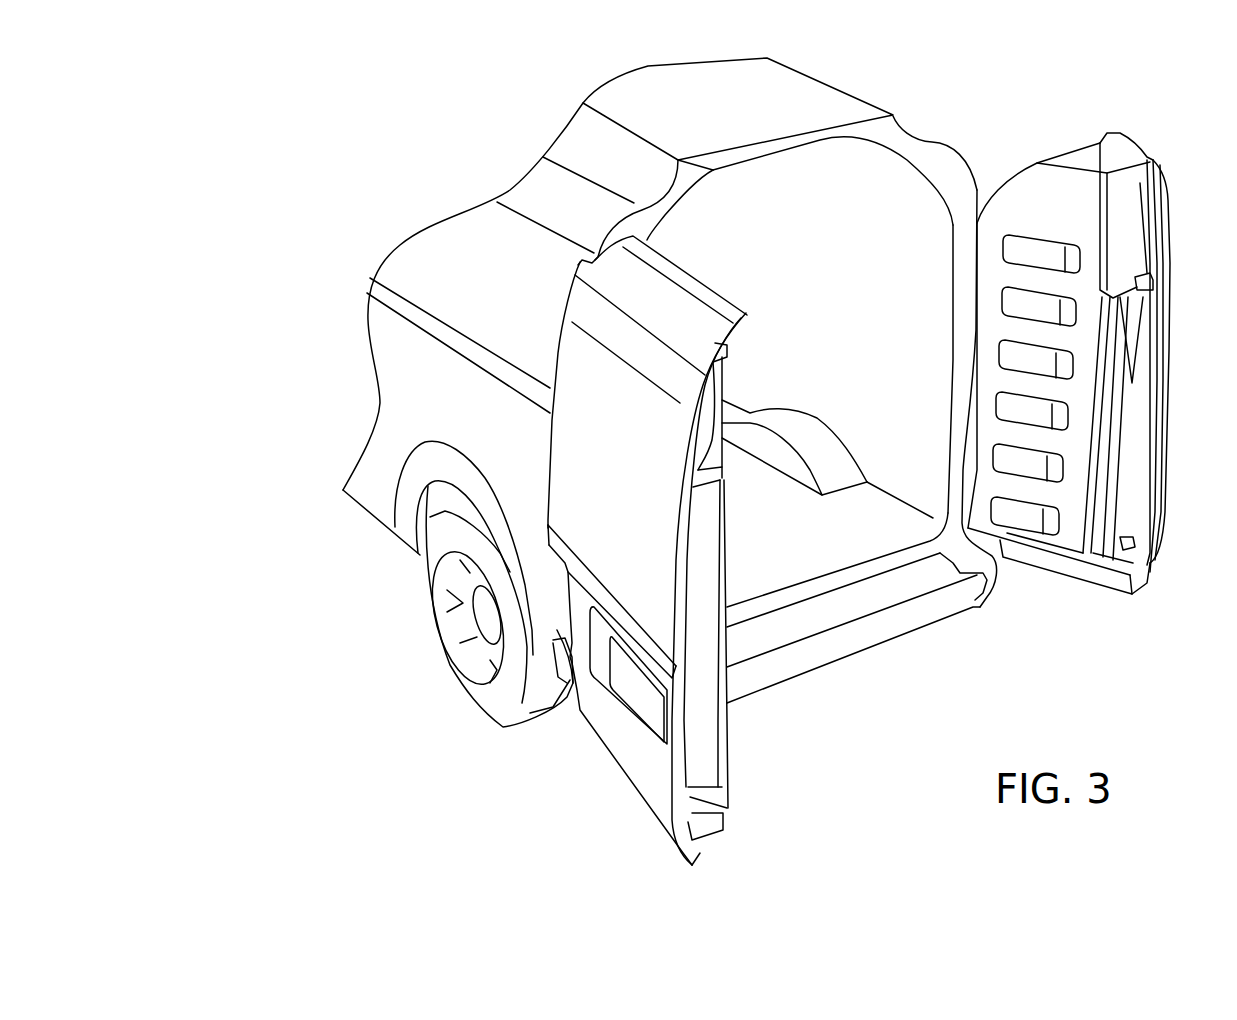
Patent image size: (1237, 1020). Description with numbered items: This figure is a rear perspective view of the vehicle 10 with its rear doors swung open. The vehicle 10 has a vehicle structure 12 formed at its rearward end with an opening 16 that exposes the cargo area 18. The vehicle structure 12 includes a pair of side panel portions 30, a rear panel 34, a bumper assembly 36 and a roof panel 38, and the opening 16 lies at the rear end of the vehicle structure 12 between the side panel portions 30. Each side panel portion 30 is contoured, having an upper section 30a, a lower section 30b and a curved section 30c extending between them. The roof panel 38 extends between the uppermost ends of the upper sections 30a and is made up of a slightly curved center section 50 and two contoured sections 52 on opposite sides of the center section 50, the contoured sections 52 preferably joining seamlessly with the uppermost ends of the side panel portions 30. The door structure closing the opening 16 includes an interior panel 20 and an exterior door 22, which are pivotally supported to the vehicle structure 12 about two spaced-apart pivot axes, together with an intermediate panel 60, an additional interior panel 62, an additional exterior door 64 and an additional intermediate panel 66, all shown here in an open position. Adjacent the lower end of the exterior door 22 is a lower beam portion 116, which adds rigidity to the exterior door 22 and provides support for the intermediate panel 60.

The vehicle 10 is at (257, 114).
The vehicle structure 12 is at (543, 141).
The opening 16 is at (910, 160).
The cargo area 18 is at (857, 531).
The interior panel 20 is at (733, 792).
The exterior door 22 is at (640, 777).
The side panel portion 30 is at (317, 183).
The upper section 30a is at (445, 258).
The lower section 30b is at (420, 373).
The curved section 30c is at (388, 297).
The rear panel 34 is at (833, 132).
The bumper assembly 36 is at (818, 615).
The roof panel 38 is at (530, 45).
The center section 50 is at (680, 103).
The contoured section 52 is at (587, 145).
The intermediate panel 60 is at (702, 740).
The additional interior panel 62 is at (1022, 198).
The additional exterior door 64 is at (1153, 150).
The additional intermediate panel 66 is at (1123, 438).
The lower beam portion 116 is at (707, 827).